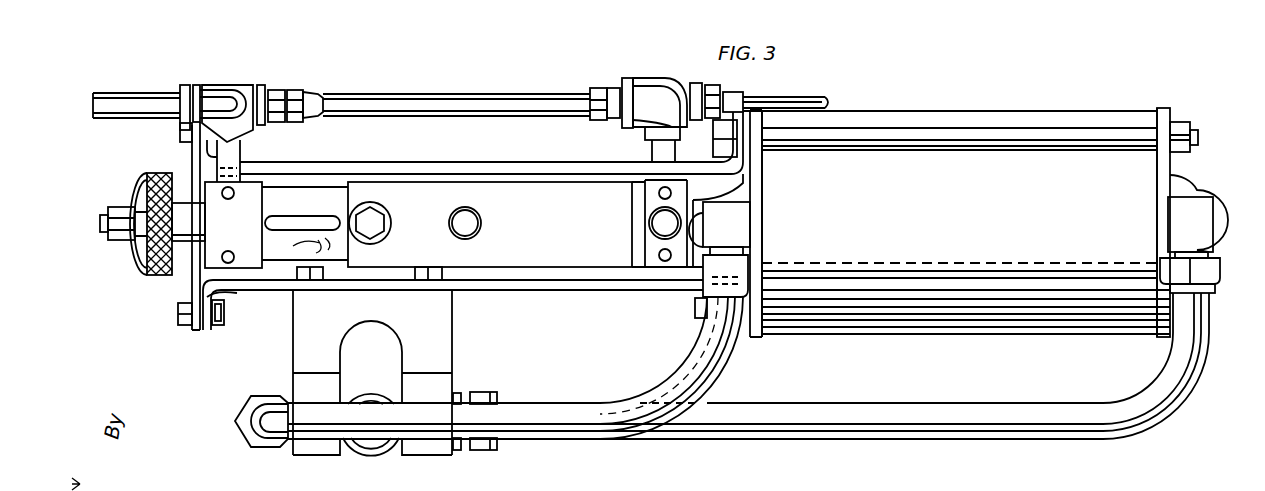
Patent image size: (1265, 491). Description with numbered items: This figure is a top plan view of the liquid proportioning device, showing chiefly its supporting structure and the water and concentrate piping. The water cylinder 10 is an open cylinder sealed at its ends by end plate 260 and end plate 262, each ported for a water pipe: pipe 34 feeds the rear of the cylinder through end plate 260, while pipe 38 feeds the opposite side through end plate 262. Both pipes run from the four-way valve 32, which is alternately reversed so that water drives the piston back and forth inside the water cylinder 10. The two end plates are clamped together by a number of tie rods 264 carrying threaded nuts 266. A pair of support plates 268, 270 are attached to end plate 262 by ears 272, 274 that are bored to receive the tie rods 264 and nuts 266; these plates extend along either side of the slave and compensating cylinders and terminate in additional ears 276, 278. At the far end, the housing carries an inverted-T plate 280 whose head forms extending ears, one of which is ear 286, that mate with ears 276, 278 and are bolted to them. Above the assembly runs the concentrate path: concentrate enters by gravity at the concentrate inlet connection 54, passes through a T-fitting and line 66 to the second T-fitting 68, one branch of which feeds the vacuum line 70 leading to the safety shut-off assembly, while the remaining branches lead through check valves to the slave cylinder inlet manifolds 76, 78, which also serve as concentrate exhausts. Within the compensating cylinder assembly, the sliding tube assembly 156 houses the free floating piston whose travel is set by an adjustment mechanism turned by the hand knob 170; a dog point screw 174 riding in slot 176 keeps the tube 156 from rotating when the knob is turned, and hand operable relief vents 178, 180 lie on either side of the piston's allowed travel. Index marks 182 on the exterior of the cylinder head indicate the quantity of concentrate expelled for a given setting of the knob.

The water cylinder 10 is at (1040, 111).
The four-way valve 32 is at (305, 347).
The pipe 34 is at (862, 432).
The pipe 38 is at (693, 364).
The concentrate inlet connection 54 is at (228, 88).
The line 66 is at (498, 85).
The T-fitting 68 is at (647, 87).
The vacuum line 70 is at (816, 90).
The slave cylinder inlet manifold 76 is at (238, 155).
The slave cylinder inlet manifold 78 is at (660, 151).
The sliding tube assembly 156 is at (553, 240).
The hand knob 170 is at (147, 192).
The dog point screw 174 is at (369, 215).
The slot 176 is at (322, 210).
The relief vent 178 is at (660, 214).
The relief vent 180 is at (466, 214).
The index marks 182 is at (300, 248).
The end plate 260 is at (1196, 208).
The end plate 262 is at (757, 242).
The tie rods 264 is at (915, 138).
The threaded nuts 266 is at (1182, 126).
The support plate 268 is at (457, 152).
The support plate 270 is at (597, 284).
The ear 272 is at (737, 148).
The ear 274 is at (747, 352).
The ear 276 is at (205, 145).
The ear 278 is at (226, 312).
The plate 280 is at (197, 276).
The ear 286 is at (178, 318).